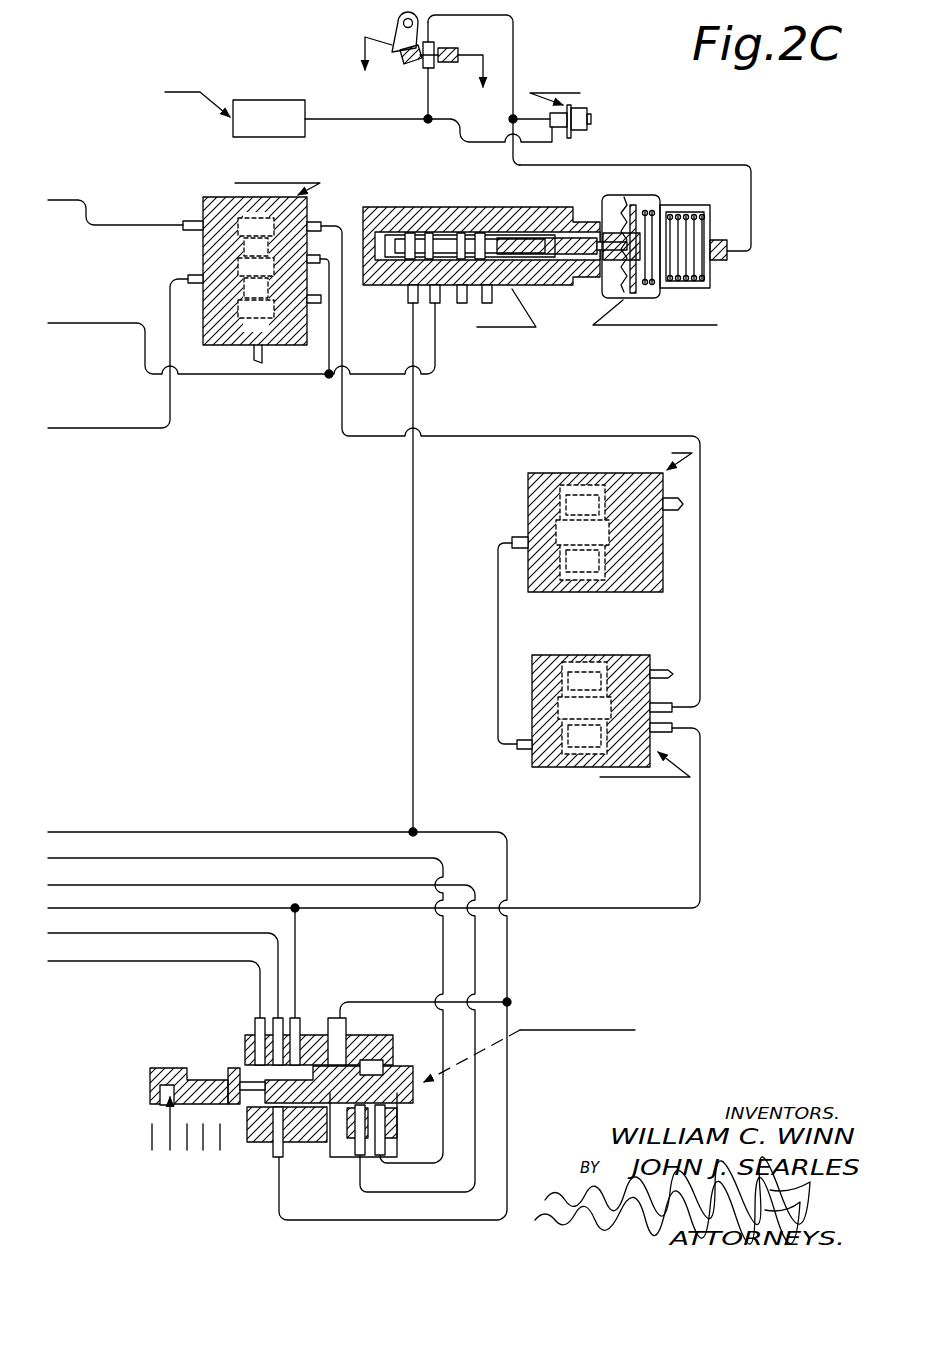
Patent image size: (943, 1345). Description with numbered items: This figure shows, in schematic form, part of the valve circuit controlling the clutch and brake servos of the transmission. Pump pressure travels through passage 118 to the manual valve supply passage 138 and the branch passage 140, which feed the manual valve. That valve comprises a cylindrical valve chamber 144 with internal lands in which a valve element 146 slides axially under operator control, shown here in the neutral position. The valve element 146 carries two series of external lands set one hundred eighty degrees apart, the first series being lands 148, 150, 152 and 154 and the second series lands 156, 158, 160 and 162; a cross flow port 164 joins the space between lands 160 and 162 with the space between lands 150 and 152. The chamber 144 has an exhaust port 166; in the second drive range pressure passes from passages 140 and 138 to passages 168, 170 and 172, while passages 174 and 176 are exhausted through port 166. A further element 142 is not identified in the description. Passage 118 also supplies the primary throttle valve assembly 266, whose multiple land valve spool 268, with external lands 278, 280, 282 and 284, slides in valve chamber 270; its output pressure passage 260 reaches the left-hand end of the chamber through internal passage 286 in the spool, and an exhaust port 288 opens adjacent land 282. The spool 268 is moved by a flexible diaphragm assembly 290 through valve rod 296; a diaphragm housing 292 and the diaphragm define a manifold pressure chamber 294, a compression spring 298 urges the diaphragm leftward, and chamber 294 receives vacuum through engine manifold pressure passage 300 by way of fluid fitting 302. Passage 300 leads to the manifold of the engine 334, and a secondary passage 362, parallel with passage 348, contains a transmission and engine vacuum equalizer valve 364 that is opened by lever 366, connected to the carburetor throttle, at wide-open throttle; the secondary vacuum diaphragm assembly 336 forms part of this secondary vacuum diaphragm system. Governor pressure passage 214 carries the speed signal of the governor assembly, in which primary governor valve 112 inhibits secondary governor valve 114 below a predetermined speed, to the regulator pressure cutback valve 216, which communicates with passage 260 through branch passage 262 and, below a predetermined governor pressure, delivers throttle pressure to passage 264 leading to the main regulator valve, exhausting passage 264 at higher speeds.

The engine 334 is at (305, 100).
The passage 348 is at (352, 120).
The lever 366 is at (392, 30).
The transmission and engine vacuum equalizer valve 364 is at (416, 70).
The secondary passage 362 is at (515, 58).
The secondary vacuum diaphragm assembly 336 is at (588, 128).
The regulator pressure cutback valve 216 is at (313, 211).
The governor pressure passage 214 is at (86, 193).
The branch passage 262 is at (330, 325).
The primary throttle valve output pressure passage 260 is at (108, 318).
The passage 264 is at (98, 421).
The external valve land 278 is at (392, 206).
The internal passage 286 is at (407, 201).
The multiple land valve spool 268 is at (458, 232).
The valve chamber 270 is at (422, 233).
The external valve land 282 is at (480, 233).
The primary throttle valve assembly 266 is at (497, 234).
The valve rod 296 is at (522, 235).
The external valve land 280 is at (407, 287).
The exhaust port 288 is at (464, 303).
The external valve land 284 is at (515, 296).
The compression spring 298 is at (687, 292).
The flexible diaphragm assembly 290 is at (617, 204).
The manifold pressure chamber 294 is at (699, 226).
The diaphragm housing 292 is at (690, 187).
The fluid fitting 302 is at (715, 256).
The engine manifold pressure passage 300 is at (752, 197).
The passage 118 is at (415, 585).
The primary governor valve 112 is at (670, 558).
The secondary governor valve 114 is at (658, 691).
The passage 172 is at (101, 902).
The passage 174 is at (103, 850).
The passage 176 is at (101, 877).
The passage 170 is at (99, 927).
The passage 168 is at (99, 952).
The external valve land 148 is at (403, 1063).
The manual valve supply passage 138 is at (510, 1064).
The branch passage 140 is at (404, 1000).
The valve element 146 is at (321, 1033).
The external valve land 150 is at (345, 1018).
The external valve land 152 is at (261, 1068).
The external valve land 154 is at (151, 1067).
The external valve land 162 is at (164, 1094).
The cross flow port 164 is at (235, 1075).
The cylindrical valve chamber 144 is at (262, 1142).
The port 142 is at (298, 1140).
The external valve land 160 is at (312, 1142).
The exhaust port 166 is at (338, 1155).
The external valve land 156 is at (380, 1110).
The external valve land 158 is at (378, 1138).